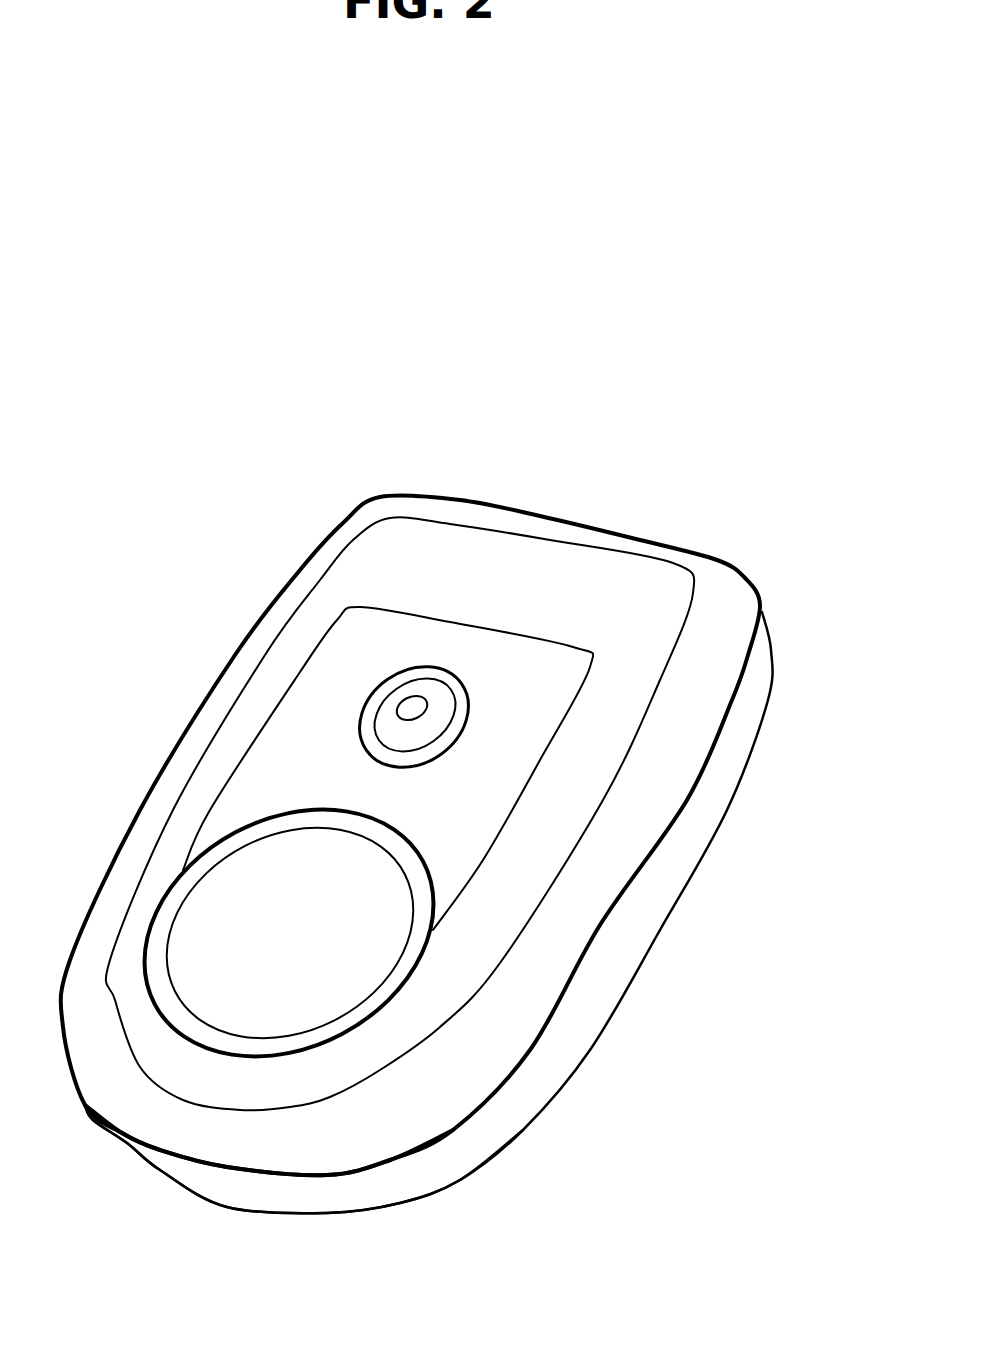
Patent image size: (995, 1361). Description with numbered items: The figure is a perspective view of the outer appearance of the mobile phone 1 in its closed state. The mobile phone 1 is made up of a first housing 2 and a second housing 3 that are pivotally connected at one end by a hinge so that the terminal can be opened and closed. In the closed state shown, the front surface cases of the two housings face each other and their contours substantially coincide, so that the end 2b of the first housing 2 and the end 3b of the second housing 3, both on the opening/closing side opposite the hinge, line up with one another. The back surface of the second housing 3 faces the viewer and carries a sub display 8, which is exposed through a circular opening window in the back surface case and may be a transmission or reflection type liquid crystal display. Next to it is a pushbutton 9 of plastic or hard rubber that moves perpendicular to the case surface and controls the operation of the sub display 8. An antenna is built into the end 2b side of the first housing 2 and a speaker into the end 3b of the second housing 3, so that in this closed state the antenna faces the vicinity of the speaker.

The mobile phone 1 is at (781, 406).
The first housing 2 is at (653, 900).
The end of the first housing 2b is at (297, 1193).
The second housing 3 is at (637, 820).
The end of the second housing 3b is at (243, 1145).
The sub display 8 is at (375, 957).
The pushbutton 9 is at (425, 705).